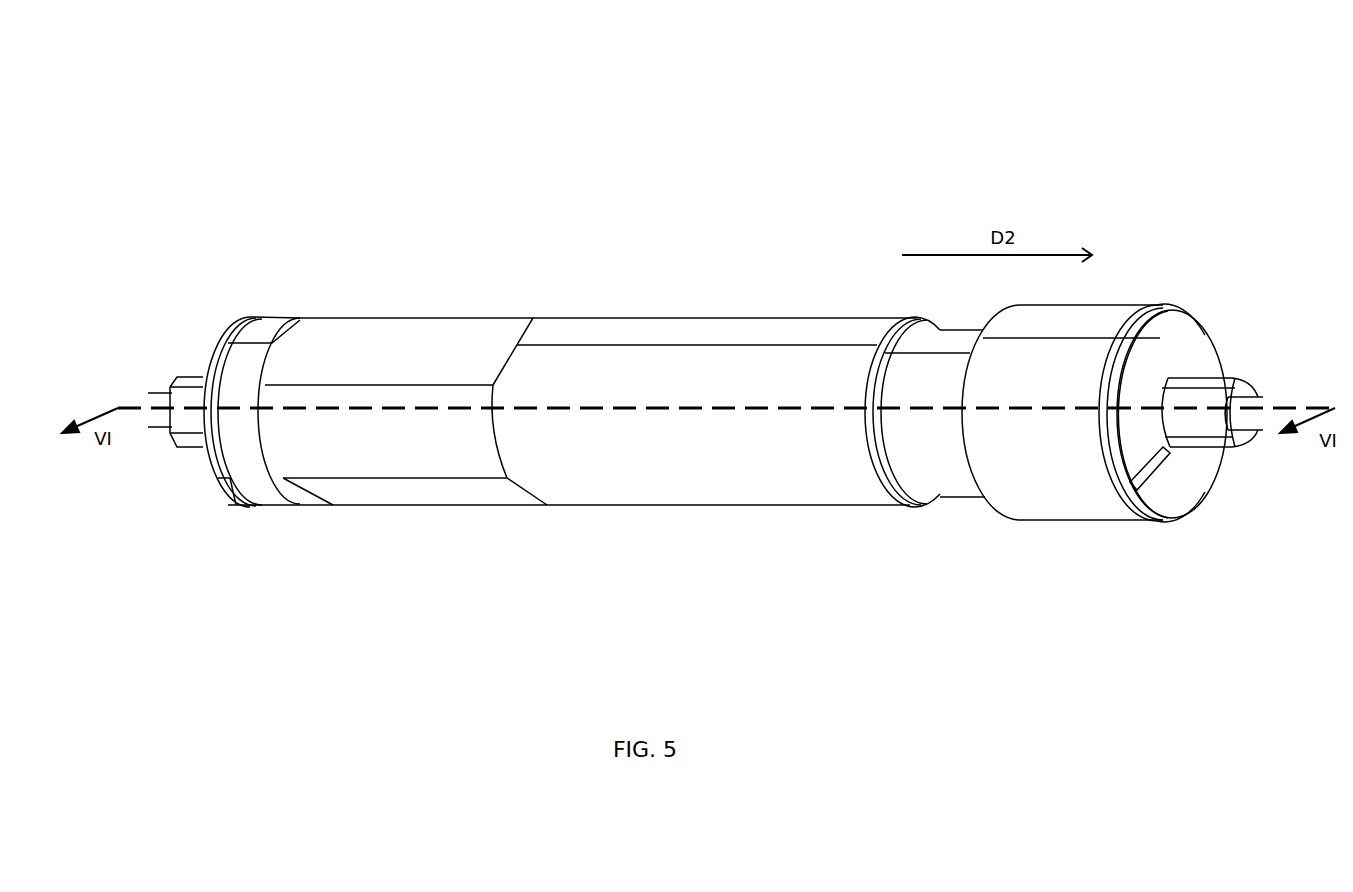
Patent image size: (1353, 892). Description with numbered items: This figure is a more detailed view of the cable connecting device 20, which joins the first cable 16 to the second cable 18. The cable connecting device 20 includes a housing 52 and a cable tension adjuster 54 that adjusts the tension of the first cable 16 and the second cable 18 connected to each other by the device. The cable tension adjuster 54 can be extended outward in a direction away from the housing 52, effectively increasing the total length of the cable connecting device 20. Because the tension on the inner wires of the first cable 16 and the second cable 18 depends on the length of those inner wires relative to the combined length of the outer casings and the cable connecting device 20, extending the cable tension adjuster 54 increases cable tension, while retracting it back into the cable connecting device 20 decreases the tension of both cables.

The first cable 16 is at (160, 457).
The second cable 18 is at (1261, 458).
The cable connecting device 20 is at (1050, 163).
The housing 52 is at (640, 553).
The cable tension adjuster 54 is at (1068, 555).